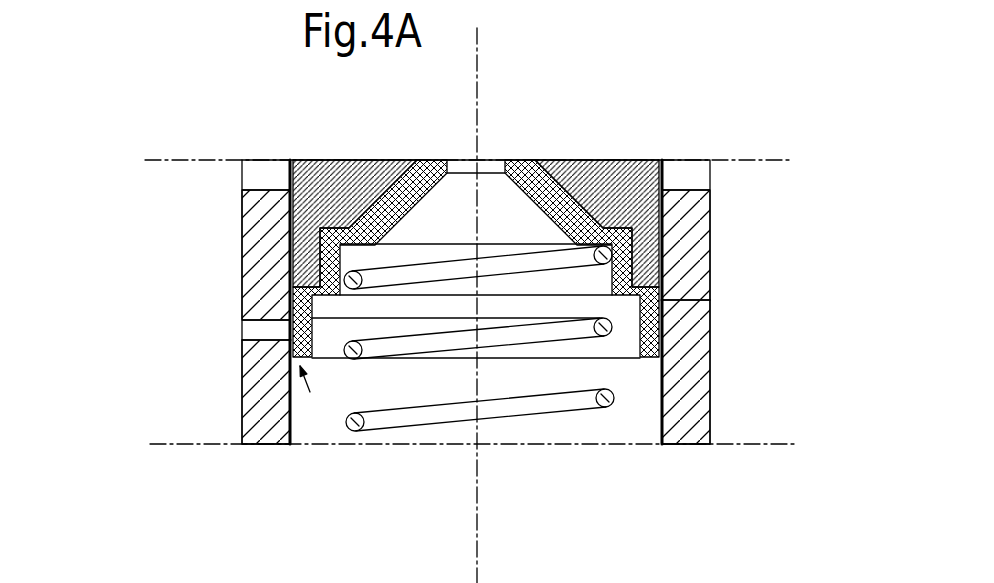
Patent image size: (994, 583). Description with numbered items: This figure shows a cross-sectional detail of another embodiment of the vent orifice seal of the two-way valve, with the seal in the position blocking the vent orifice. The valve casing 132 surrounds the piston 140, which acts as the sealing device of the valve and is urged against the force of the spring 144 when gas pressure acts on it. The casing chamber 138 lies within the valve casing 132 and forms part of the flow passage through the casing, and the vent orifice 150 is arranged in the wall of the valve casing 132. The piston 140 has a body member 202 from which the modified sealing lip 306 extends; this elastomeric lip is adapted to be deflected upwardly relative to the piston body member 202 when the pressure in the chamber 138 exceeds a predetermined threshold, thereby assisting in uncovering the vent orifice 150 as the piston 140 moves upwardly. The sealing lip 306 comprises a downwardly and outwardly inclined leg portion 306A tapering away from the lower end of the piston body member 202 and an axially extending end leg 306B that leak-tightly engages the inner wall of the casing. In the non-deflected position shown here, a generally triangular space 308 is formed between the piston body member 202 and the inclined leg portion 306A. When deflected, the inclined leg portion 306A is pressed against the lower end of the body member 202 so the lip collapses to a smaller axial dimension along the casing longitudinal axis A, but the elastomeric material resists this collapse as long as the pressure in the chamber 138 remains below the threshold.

The casing longitudinal axis A is at (482, 442).
The valve casing 132 is at (242, 430).
The casing chamber 138 is at (623, 426).
The piston 140 is at (653, 200).
The spring 144 is at (357, 437).
The vent orifice 150 is at (240, 368).
The piston body member 202 is at (576, 178).
The modified sealing lip 306 is at (617, 347).
The inclined leg portion 306A is at (663, 304).
The axially extending end leg 306B is at (243, 395).
The generally triangular space 308 is at (297, 290).